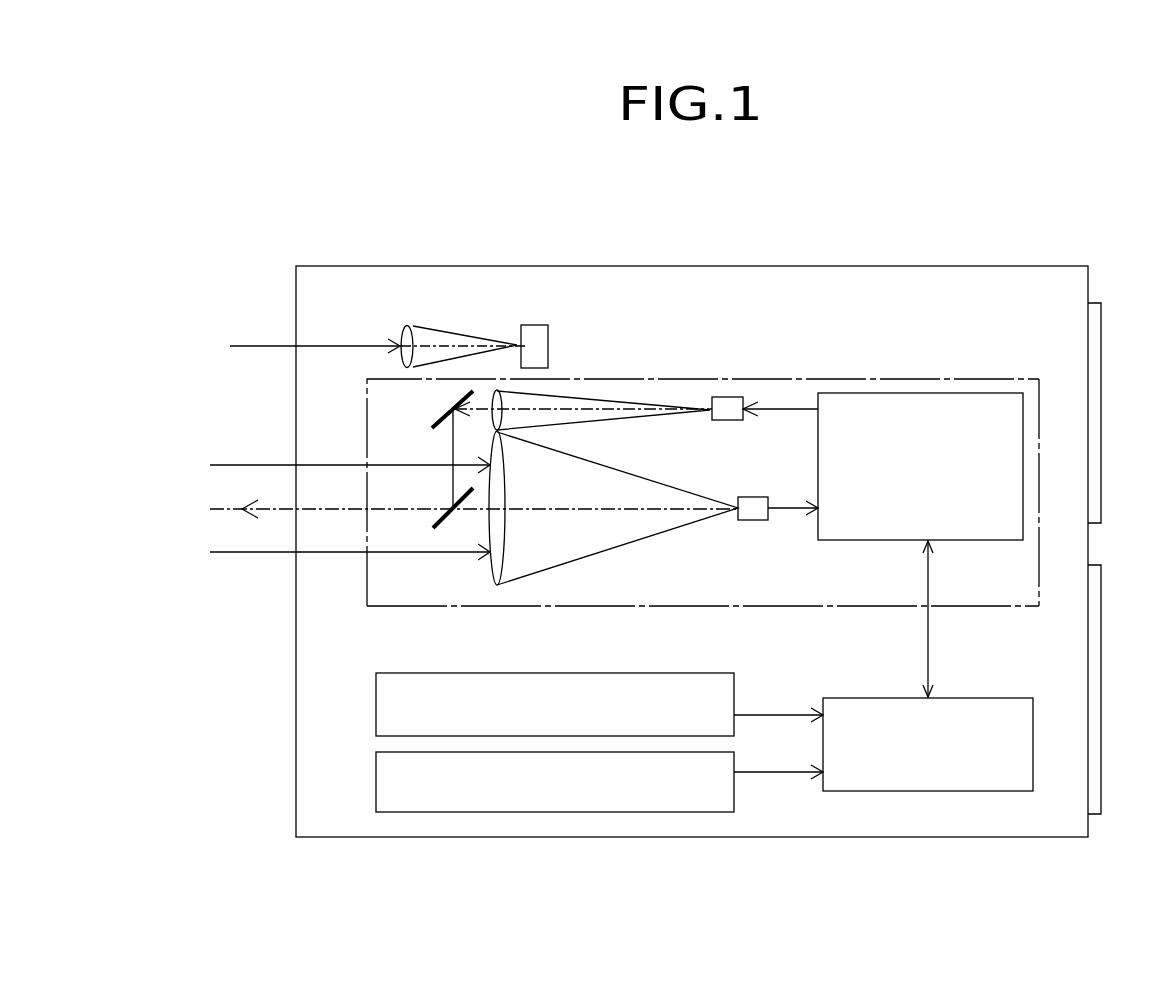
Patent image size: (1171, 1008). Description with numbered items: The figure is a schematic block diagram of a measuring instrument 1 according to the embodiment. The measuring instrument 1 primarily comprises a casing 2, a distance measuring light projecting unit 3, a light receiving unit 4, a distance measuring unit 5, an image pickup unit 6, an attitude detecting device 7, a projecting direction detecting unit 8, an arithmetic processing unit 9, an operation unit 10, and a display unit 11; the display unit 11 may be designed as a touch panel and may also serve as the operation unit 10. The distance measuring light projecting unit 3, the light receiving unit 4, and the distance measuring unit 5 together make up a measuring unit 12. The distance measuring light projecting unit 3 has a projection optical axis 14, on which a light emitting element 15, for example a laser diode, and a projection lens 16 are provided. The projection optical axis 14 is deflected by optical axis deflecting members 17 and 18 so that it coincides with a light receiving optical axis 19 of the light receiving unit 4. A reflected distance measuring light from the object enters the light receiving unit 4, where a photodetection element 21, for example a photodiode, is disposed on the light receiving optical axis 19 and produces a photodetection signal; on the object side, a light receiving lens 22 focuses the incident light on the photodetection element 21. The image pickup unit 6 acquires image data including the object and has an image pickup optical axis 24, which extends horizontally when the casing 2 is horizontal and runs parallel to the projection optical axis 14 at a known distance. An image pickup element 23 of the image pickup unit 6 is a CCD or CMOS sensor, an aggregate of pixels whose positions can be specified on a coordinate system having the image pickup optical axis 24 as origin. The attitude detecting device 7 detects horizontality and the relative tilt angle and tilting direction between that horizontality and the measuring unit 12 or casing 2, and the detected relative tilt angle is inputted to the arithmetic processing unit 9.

The measuring instrument 1 is at (687, 227).
The casing 2 is at (835, 266).
The distance measuring light projecting unit 3 is at (621, 391).
The light receiving unit 4 is at (613, 516).
The distance measuring unit 5 is at (871, 393).
The image pickup unit 6 is at (428, 282).
The attitude detecting device 7 is at (376, 772).
The projecting direction detecting unit 8 is at (376, 703).
The arithmetic processing unit 9 is at (870, 698).
The operation unit 10 is at (1101, 648).
The display unit 11 is at (1101, 419).
The measuring unit 12 is at (915, 380).
The projection optical axis 14 is at (550, 414).
The light emitting element 15 is at (727, 397).
The projection lens 16 is at (512, 406).
The optical axis deflecting member 17 is at (433, 425).
The optical axis deflecting member 18 is at (433, 524).
The light receiving optical axis 19 is at (601, 509).
The photodetection element 21 is at (748, 497).
The light receiving lens 22 is at (505, 478).
The image pickup element 23 is at (548, 333).
The image pickup optical axis 24 is at (453, 346).